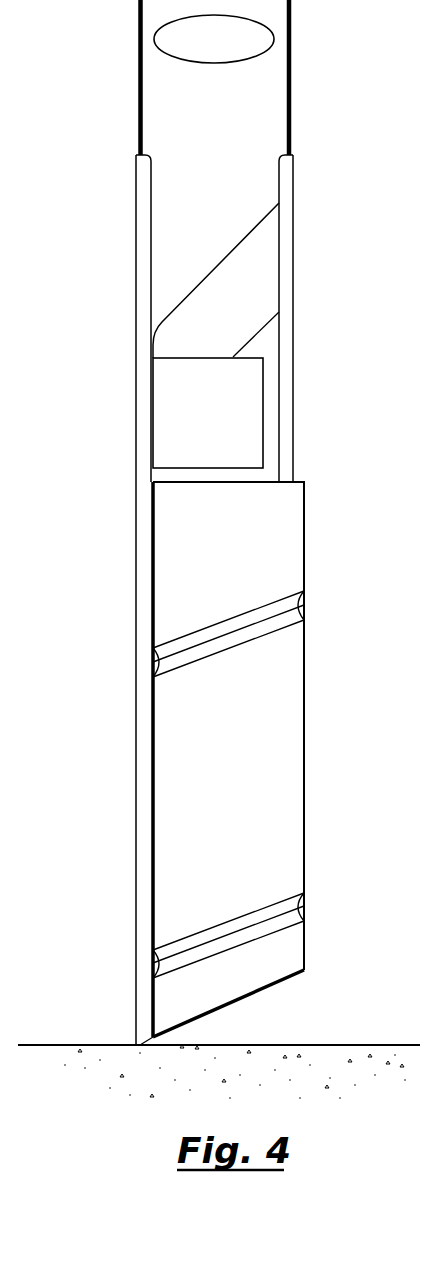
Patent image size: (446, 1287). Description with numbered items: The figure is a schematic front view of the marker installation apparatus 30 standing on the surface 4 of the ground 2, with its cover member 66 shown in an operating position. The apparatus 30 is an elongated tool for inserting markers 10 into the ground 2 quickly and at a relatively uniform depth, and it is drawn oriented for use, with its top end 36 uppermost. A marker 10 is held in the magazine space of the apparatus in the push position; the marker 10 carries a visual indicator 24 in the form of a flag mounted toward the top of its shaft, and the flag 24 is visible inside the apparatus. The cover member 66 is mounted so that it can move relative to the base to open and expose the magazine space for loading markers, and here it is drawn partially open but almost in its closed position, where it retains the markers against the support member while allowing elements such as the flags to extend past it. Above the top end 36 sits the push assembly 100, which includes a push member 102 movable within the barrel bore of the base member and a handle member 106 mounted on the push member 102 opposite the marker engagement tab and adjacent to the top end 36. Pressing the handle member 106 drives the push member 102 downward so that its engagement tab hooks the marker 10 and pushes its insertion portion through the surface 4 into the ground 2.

The ground 2 is at (130, 1065).
The surface of the ground 4 is at (313, 1045).
The marker 10 is at (227, 345).
The visual indicator 24 is at (228, 405).
The marker installation apparatus 30 is at (312, 235).
The top end 36 is at (293, 158).
The cover member 66 is at (278, 750).
The push assembly 100 is at (310, 75).
The push member 102 is at (190, 237).
The handle member 106 is at (292, 17).